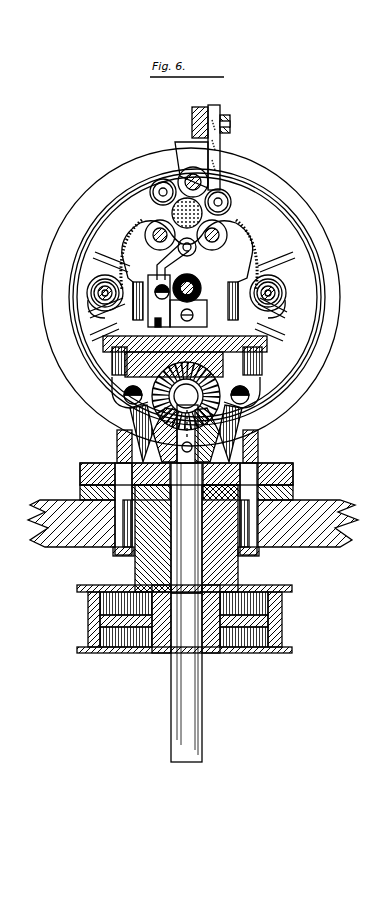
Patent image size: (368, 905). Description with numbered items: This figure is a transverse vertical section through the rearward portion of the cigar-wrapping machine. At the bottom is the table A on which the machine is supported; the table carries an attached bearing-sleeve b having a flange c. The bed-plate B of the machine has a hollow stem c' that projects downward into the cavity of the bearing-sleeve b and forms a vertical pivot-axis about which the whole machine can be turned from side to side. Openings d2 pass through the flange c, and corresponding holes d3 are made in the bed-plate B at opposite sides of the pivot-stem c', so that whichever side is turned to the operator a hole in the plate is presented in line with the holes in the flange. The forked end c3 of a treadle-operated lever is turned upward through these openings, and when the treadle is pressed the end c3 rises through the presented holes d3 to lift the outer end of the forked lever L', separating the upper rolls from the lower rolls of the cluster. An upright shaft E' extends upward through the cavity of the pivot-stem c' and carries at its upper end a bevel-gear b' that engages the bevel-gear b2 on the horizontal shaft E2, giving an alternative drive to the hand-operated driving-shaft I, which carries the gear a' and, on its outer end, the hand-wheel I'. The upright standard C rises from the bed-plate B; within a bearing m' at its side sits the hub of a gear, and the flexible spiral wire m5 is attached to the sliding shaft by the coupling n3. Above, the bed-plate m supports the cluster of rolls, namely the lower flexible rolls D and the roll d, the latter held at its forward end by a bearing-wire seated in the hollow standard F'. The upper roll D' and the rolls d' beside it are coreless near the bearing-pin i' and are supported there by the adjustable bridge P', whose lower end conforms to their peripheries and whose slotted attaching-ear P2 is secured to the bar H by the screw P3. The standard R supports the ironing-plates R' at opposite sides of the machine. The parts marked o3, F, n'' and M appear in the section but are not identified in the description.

The hand-wheel I' is at (191, 297).
The bar H is at (192, 119).
The slotted attaching-ear P2 is at (215, 107).
The screw P3 is at (231, 125).
The adjustable bridge P' is at (204, 165).
The upper roll D' is at (206, 182).
The upper rolls d' is at (196, 192).
The screw o3 is at (187, 217).
The standard R is at (187, 274).
The flexible rolls D is at (188, 235).
The ironing-plates R' is at (188, 254).
The roll d is at (184, 261).
The link F is at (152, 258).
The hollow standard F' is at (149, 301).
The bearing-pin i' is at (155, 314).
The hand-operated driving-shaft I is at (193, 297).
The flexible spiral wire m5 is at (97, 280).
The bearing m' is at (185, 293).
The coupling n3 is at (92, 302).
The gear a' is at (185, 356).
The bed-plate m is at (184, 332).
The flange c is at (183, 423).
The horizontal shaft E2 is at (186, 396).
The bevel-gear b2 is at (203, 376).
The upright standard C is at (258, 409).
The bevel-gear b' is at (190, 435).
The forked lever L' is at (182, 446).
The bed-plate B is at (293, 466).
The holes d3 is at (258, 474).
The openings d2 is at (265, 478).
The forked end of lever c3 is at (115, 513).
The table A is at (193, 523).
The nut n'' is at (189, 558).
The bearing-sleeve b is at (182, 538).
The hollow stem c' is at (186, 528).
The upright shaft E' is at (186, 677).
The spool M is at (283, 620).